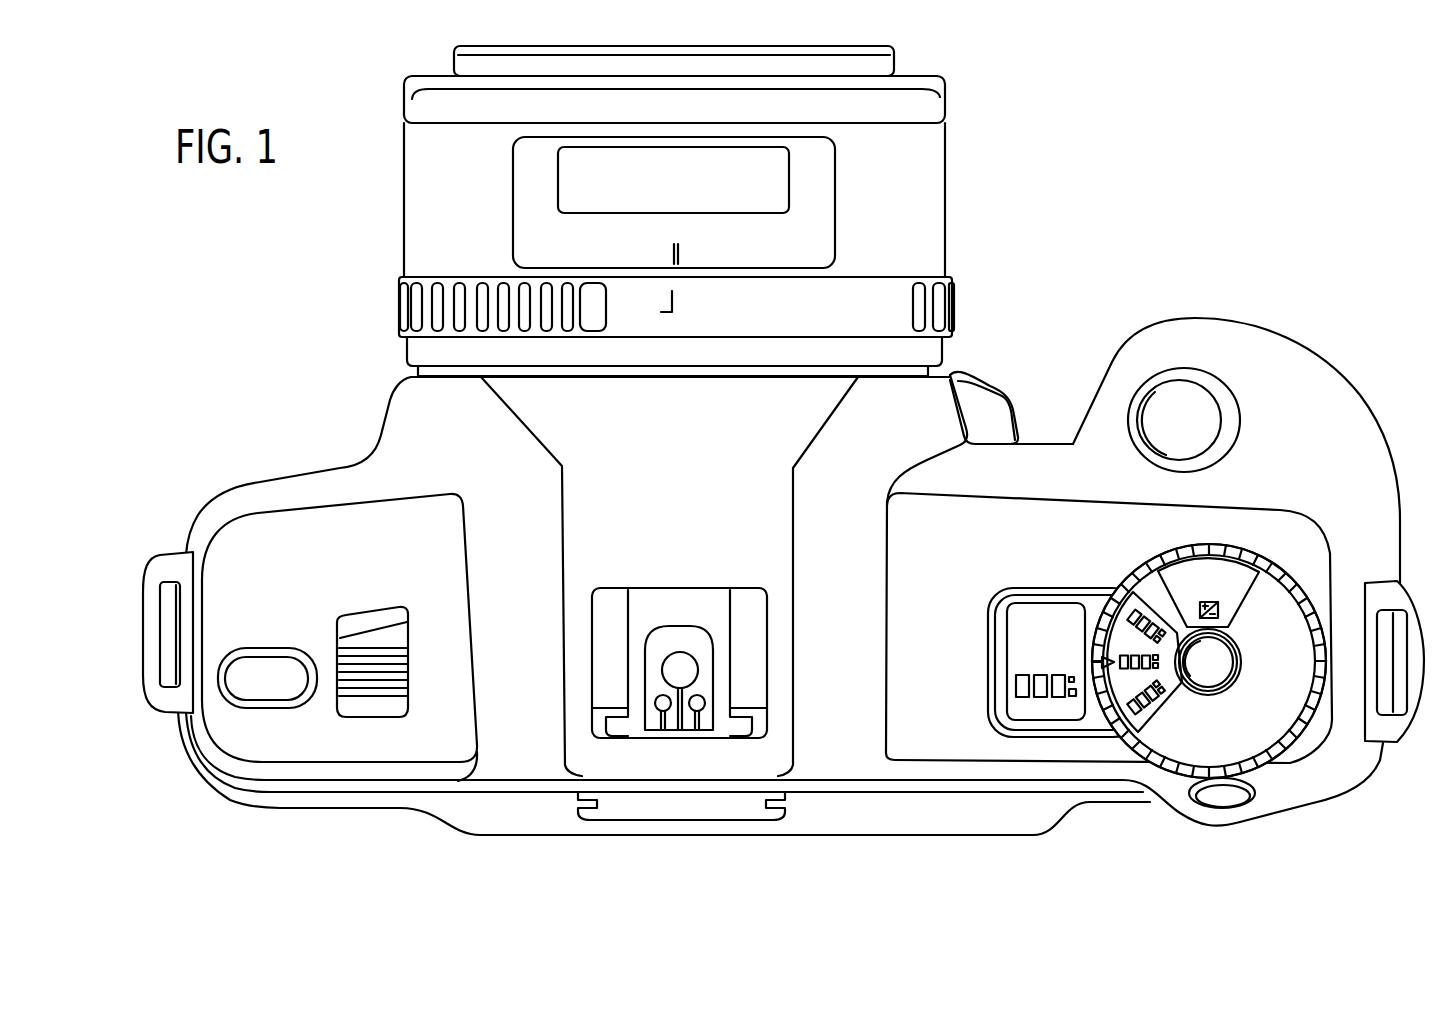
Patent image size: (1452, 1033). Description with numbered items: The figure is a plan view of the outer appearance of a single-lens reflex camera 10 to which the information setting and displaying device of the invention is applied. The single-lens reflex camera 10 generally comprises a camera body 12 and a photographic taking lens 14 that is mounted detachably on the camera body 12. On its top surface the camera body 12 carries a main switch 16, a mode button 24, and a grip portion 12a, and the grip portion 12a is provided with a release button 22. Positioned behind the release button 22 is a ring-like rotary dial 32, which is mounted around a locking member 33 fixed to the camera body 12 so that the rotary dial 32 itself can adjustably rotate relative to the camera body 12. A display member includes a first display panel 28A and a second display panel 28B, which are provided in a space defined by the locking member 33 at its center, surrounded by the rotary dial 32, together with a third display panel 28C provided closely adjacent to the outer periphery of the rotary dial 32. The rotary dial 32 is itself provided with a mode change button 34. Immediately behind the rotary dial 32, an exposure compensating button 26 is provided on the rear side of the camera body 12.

The single-lens reflex camera 10 is at (1080, 178).
The camera body 12 is at (270, 455).
The grip portion 12a is at (1300, 360).
The photographic taking lens 14 is at (380, 185).
The main switch 16 is at (322, 636).
The release button 22 is at (1167, 407).
The mode button 24 is at (252, 690).
The exposure compensating button 26 is at (1227, 798).
The first display panel 28A is at (1137, 600).
The second display panel 28B is at (1148, 562).
The third display panel 28C is at (1020, 708).
The rotary dial 32 is at (1167, 765).
The locking member 33 is at (1267, 627).
The mode change button 34 is at (1210, 665).